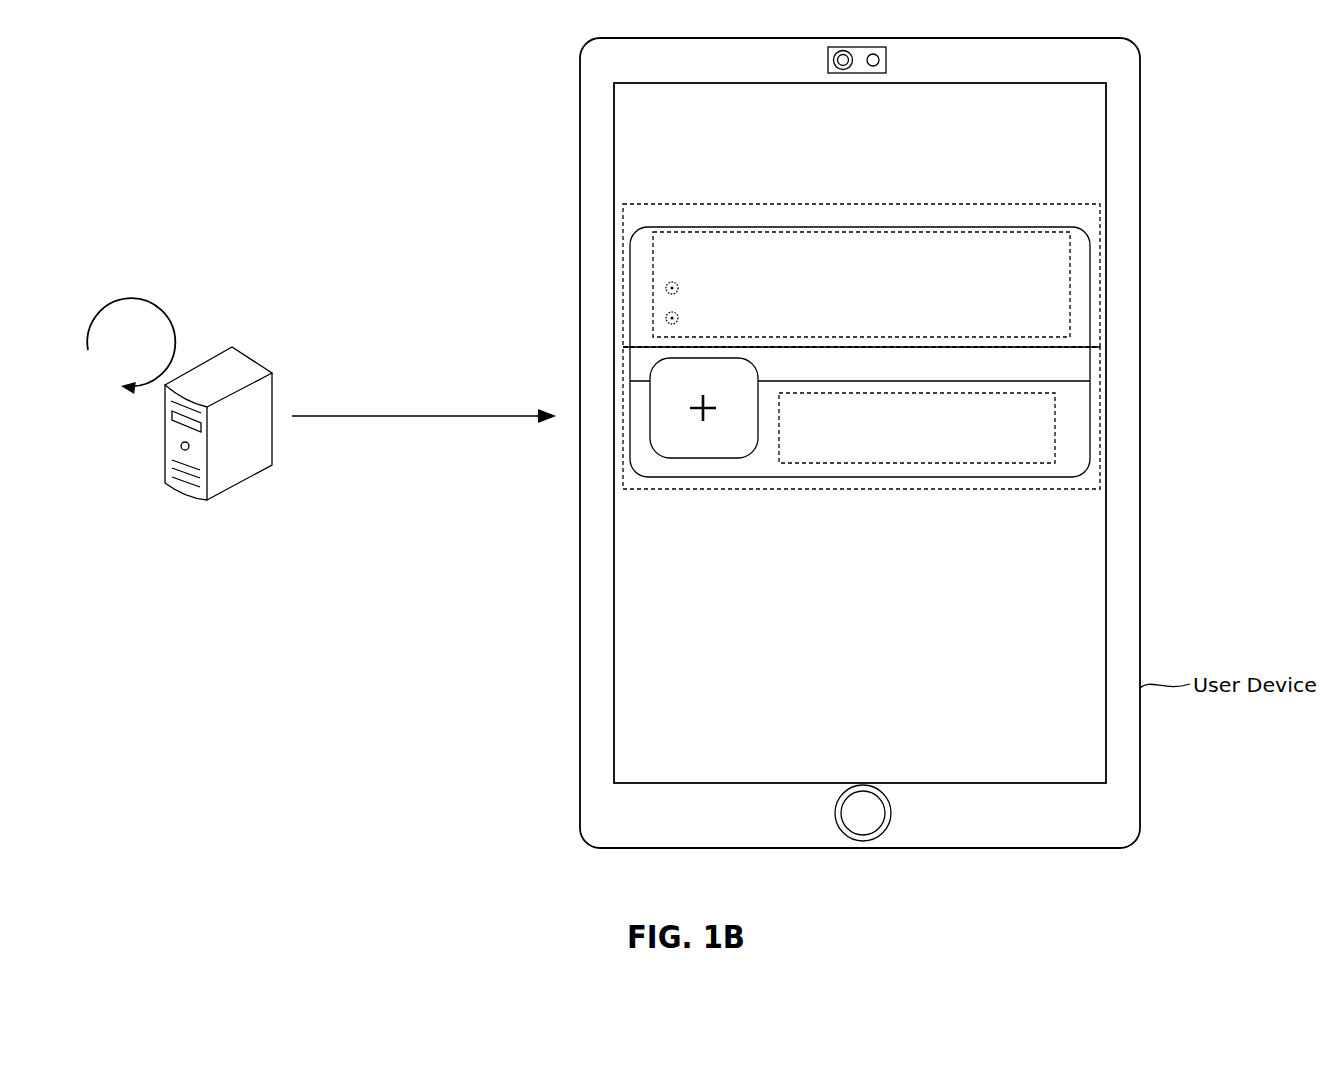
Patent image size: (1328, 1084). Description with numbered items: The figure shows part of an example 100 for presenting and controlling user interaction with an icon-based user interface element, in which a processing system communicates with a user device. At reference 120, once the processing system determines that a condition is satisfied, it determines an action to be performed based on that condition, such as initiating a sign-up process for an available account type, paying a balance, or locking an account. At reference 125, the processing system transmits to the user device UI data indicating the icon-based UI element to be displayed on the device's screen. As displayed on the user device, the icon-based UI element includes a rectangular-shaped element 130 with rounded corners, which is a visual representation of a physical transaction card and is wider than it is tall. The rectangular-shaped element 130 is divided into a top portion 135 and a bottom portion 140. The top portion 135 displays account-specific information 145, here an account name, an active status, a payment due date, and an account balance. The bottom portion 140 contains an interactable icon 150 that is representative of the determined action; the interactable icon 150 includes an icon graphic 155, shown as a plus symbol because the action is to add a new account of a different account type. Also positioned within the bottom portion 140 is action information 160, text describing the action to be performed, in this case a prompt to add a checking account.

The example 100 is at (195, 52).
The determining an action to be performed based on the condition 120 is at (216, 291).
The transmitting UI data indicating the icon-based UI element 125 is at (424, 362).
The rectangular-shaped element 130 is at (833, 228).
The top portion 135 is at (946, 204).
The bottom portion 140 is at (842, 492).
The account-specific information 145 is at (715, 231).
The interactable icon 150 is at (742, 458).
The icon graphic 155 is at (703, 418).
The action information 160 is at (988, 465).